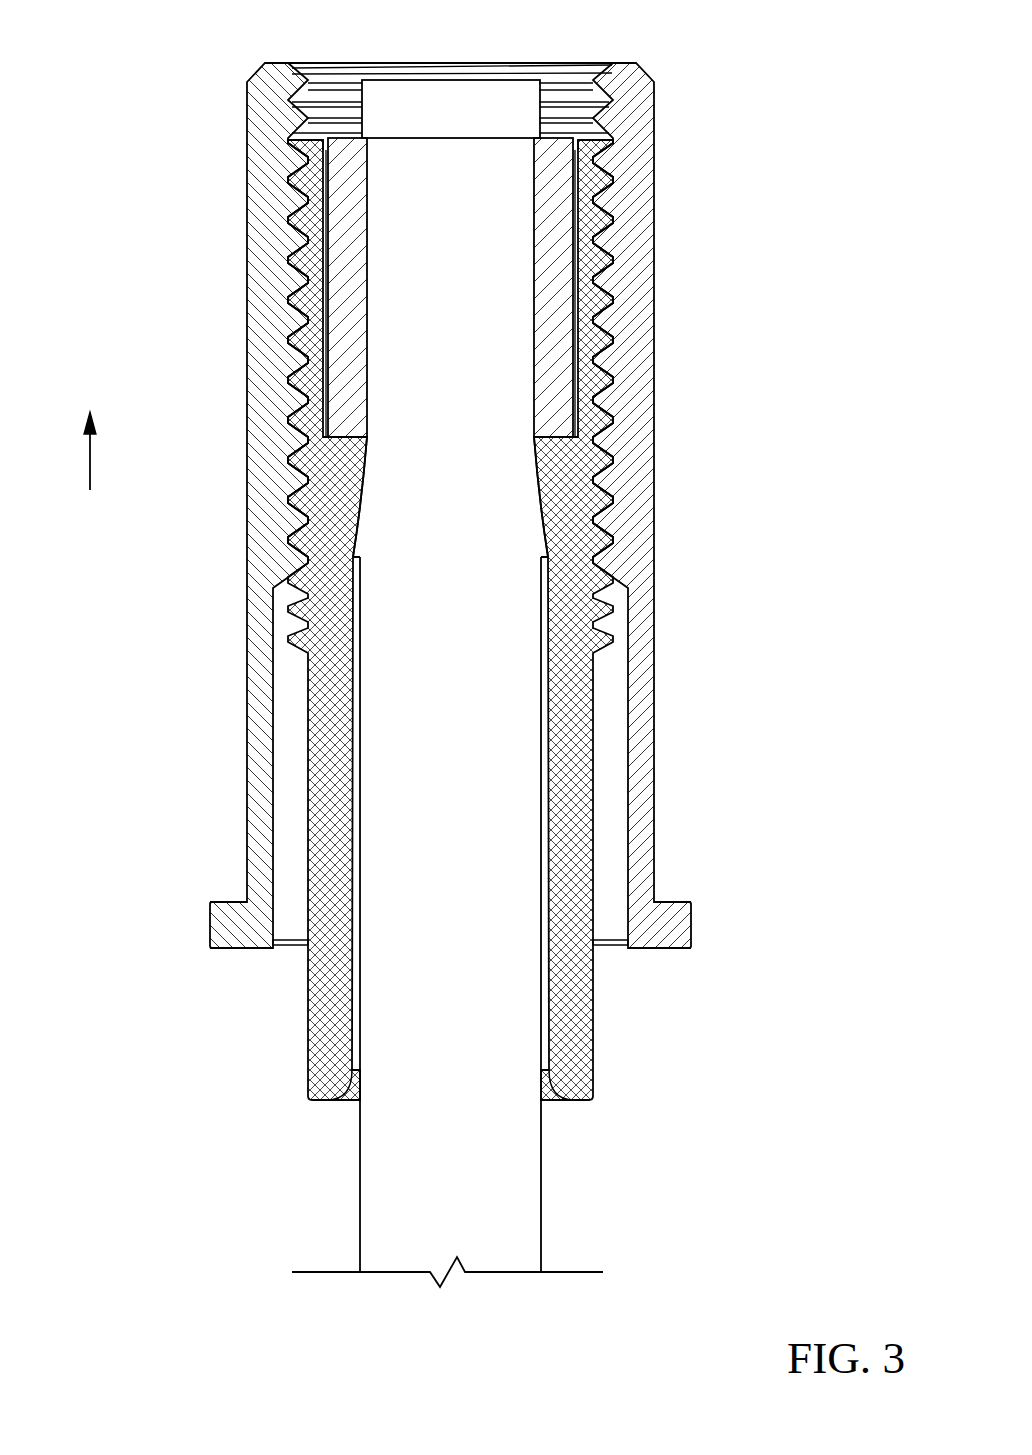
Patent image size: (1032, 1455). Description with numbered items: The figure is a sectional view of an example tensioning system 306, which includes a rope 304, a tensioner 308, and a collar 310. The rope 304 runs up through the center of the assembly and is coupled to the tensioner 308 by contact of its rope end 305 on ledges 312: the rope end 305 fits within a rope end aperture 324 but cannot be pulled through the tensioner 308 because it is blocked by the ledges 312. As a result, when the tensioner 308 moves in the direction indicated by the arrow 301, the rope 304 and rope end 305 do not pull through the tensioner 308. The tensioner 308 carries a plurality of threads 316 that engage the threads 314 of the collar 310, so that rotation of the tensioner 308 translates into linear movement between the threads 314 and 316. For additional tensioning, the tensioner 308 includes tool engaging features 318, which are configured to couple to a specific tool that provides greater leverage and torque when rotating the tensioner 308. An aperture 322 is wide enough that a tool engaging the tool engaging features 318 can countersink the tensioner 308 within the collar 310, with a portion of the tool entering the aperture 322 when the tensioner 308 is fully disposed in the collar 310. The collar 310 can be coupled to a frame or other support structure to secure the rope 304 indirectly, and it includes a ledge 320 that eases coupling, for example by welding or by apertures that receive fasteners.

The arrow 301 is at (87, 443).
The rope 304 is at (378, 1174).
The rope end 305 is at (558, 138).
The tensioning system 306 is at (120, 145).
The tensioner 308 is at (573, 972).
The collar 310 is at (680, 902).
The ledges 312 is at (347, 440).
The threads 314 is at (640, 240).
The threads 316 is at (613, 163).
The tool engaging features 318 is at (592, 1058).
The ledge 320 is at (225, 902).
The aperture 322 is at (295, 920).
The rope end aperture 324 is at (327, 147).